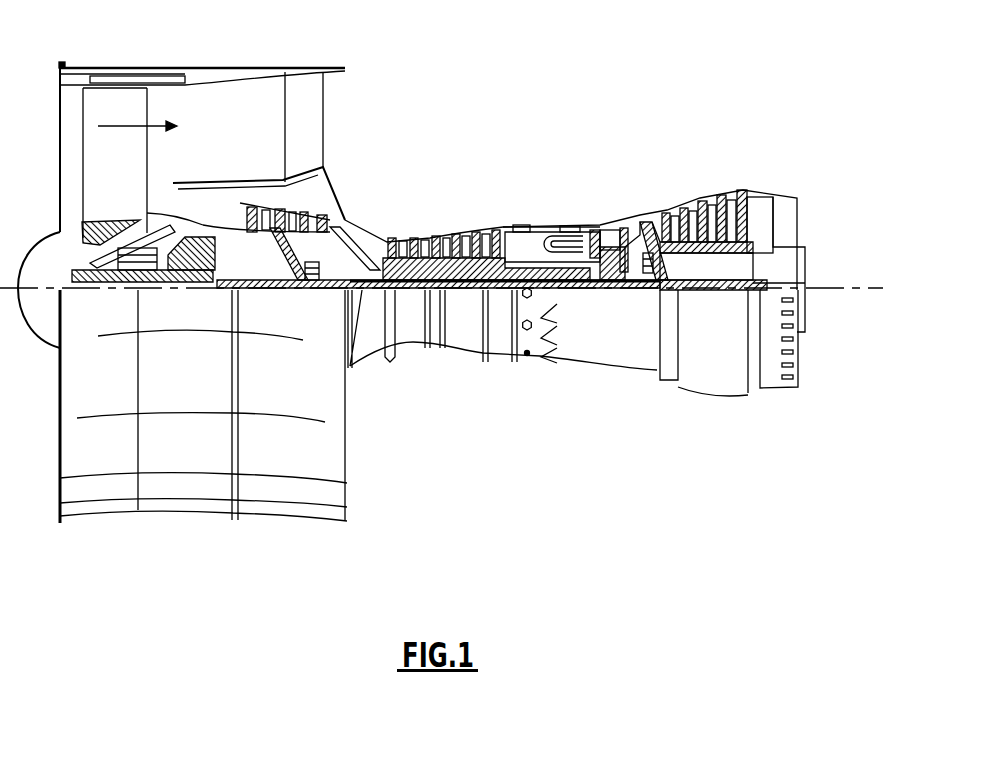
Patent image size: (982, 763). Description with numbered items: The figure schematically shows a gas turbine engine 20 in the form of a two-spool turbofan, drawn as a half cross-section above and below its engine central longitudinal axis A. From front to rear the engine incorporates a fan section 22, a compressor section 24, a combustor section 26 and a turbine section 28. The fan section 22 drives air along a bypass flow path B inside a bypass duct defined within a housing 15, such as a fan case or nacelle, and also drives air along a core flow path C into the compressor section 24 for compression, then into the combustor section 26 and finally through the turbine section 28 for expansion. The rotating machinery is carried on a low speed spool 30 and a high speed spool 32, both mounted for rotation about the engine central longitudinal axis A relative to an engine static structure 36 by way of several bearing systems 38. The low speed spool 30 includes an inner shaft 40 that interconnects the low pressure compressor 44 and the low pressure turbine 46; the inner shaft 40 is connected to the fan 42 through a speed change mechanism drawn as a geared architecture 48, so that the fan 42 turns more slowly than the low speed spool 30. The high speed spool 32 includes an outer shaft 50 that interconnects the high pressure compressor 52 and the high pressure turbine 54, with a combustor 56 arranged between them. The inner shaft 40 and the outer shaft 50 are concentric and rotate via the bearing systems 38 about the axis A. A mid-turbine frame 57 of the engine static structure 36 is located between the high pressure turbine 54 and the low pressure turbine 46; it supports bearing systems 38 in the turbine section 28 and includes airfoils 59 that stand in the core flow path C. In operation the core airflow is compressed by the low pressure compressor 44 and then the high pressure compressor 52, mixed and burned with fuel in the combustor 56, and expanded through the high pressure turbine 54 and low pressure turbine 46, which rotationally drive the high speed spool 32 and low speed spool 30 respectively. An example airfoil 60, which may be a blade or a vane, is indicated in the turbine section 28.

The housing 15 is at (202, 64).
The gas turbine engine 20 is at (561, 107).
The fan section 22 is at (146, 58).
The compressor section 24 is at (386, 212).
The combustor section 26 is at (559, 203).
The turbine section 28 is at (692, 158).
The low speed spool 30 is at (467, 298).
The high speed spool 32 is at (503, 240).
The engine static structure 36 is at (497, 365).
The bearing systems 38 is at (312, 290).
The inner shaft 40 is at (367, 352).
The fan 42 is at (131, 169).
The low pressure compressor 44 is at (295, 218).
The low pressure turbine 46 is at (707, 203).
The geared architecture 48 is at (204, 290).
The outer shaft 50 is at (567, 288).
The high pressure compressor 52 is at (445, 237).
The high pressure turbine 54 is at (610, 223).
The combustor 56 is at (557, 243).
The mid-turbine frame 57 is at (647, 213).
The airfoils 59 is at (673, 270).
The airfoil 60 is at (647, 217).
The engine central longitudinal axis A is at (873, 288).
The bypass flow path B is at (128, 126).
The core flow path C is at (204, 208).